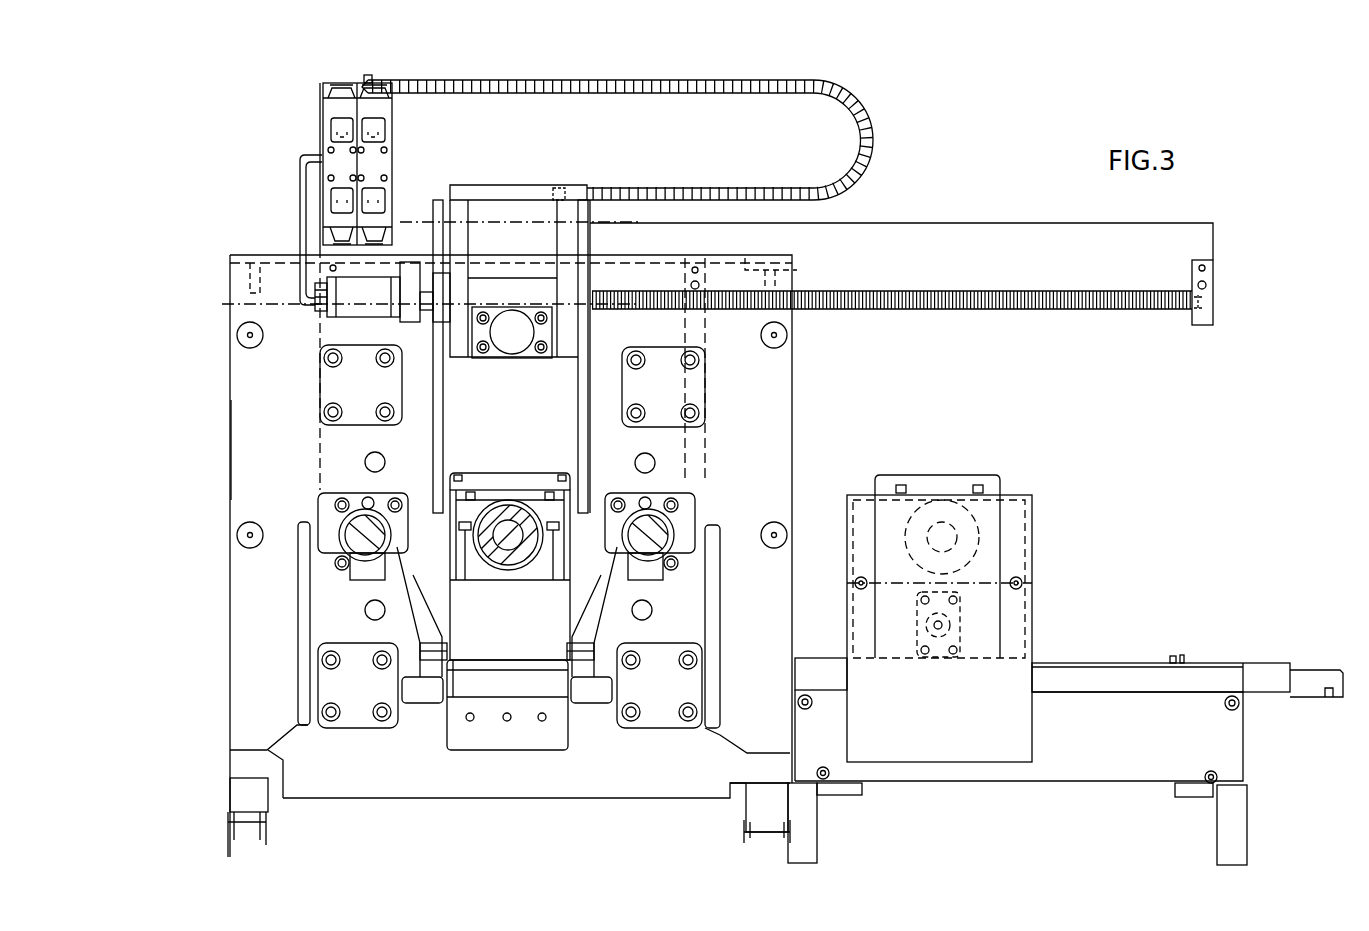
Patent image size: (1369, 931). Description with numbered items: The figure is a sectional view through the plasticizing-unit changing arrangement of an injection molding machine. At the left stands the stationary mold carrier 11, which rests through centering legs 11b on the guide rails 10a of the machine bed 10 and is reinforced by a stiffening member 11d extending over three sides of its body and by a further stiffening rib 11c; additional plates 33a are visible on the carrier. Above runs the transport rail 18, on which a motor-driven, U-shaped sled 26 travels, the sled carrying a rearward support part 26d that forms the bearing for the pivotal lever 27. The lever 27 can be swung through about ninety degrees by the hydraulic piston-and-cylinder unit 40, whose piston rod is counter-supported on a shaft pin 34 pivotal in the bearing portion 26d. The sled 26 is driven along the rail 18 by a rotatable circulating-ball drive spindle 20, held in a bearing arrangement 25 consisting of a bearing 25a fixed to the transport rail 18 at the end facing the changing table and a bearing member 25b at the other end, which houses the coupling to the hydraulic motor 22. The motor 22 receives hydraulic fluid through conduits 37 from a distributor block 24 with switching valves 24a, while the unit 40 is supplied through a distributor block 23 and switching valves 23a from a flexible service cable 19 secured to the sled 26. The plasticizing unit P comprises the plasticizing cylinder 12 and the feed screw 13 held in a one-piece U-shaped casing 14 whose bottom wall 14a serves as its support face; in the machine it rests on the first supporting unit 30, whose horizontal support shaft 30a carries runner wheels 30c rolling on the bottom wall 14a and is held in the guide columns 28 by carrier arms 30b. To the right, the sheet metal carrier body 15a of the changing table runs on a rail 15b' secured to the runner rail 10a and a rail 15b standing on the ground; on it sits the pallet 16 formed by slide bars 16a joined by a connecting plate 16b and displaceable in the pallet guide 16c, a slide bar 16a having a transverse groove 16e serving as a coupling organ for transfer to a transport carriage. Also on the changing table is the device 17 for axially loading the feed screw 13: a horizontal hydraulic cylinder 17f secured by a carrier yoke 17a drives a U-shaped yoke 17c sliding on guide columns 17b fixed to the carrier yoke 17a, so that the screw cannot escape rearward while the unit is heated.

The machine bed 10 is at (782, 853).
The guide rails 10a is at (772, 802).
The stationary mold carrier 11 is at (228, 507).
The centering legs 11b is at (762, 768).
The stiffening rib 11c is at (330, 338).
The stiffening member 11d is at (262, 447).
The plasticizing cylinder 12 is at (513, 555).
The feed screw 13 is at (505, 548).
The casing 14 is at (942, 472).
The bottom wall 14a is at (543, 660).
The carrier body 15a is at (1216, 749).
The rail 15b is at (1243, 824).
The rail 15b' is at (858, 801).
The pallet 16 is at (1151, 659).
The slide bars 16a is at (1302, 677).
The connecting plate 16b is at (1183, 660).
The pallet guide 16c is at (1250, 677).
The transverse groove 16e is at (1328, 698).
The device 17 is at (1037, 593).
The carrier yoke 17a is at (1002, 715).
The guide columns 17b is at (1030, 580).
The U-shaped yoke 17c is at (1030, 653).
The hydraulic cylinder 17f is at (1032, 622).
The transport rail 18 is at (985, 245).
The service cable 19 is at (857, 130).
The drive spindle 20 is at (870, 310).
The hydraulic motor 22 is at (365, 340).
The distributor block 23 is at (393, 156).
The switching valves 23a is at (392, 113).
The distributor block 24 is at (318, 152).
The switching valves 24a is at (318, 113).
The cylinder 25 is at (425, 290).
The bearing 25a is at (1208, 296).
The bearing member 25b is at (412, 322).
The sled 26 is at (598, 264).
The rearward support part 26d is at (497, 293).
The pivotal lever 27 is at (440, 457).
The guide columns 28 is at (337, 512).
The first supporting unit 30 is at (423, 704).
The support shaft 30a is at (523, 683).
The carrier arms 30b is at (617, 602).
The runner wheels 30c is at (450, 697).
The lower mounting plates 33a is at (355, 702).
The shaft pin 34 is at (592, 330).
The conduits 37 is at (320, 290).
The hydraulic piston-and-cylinder unit 40 is at (509, 364).
The plasticizing unit P is at (533, 458).